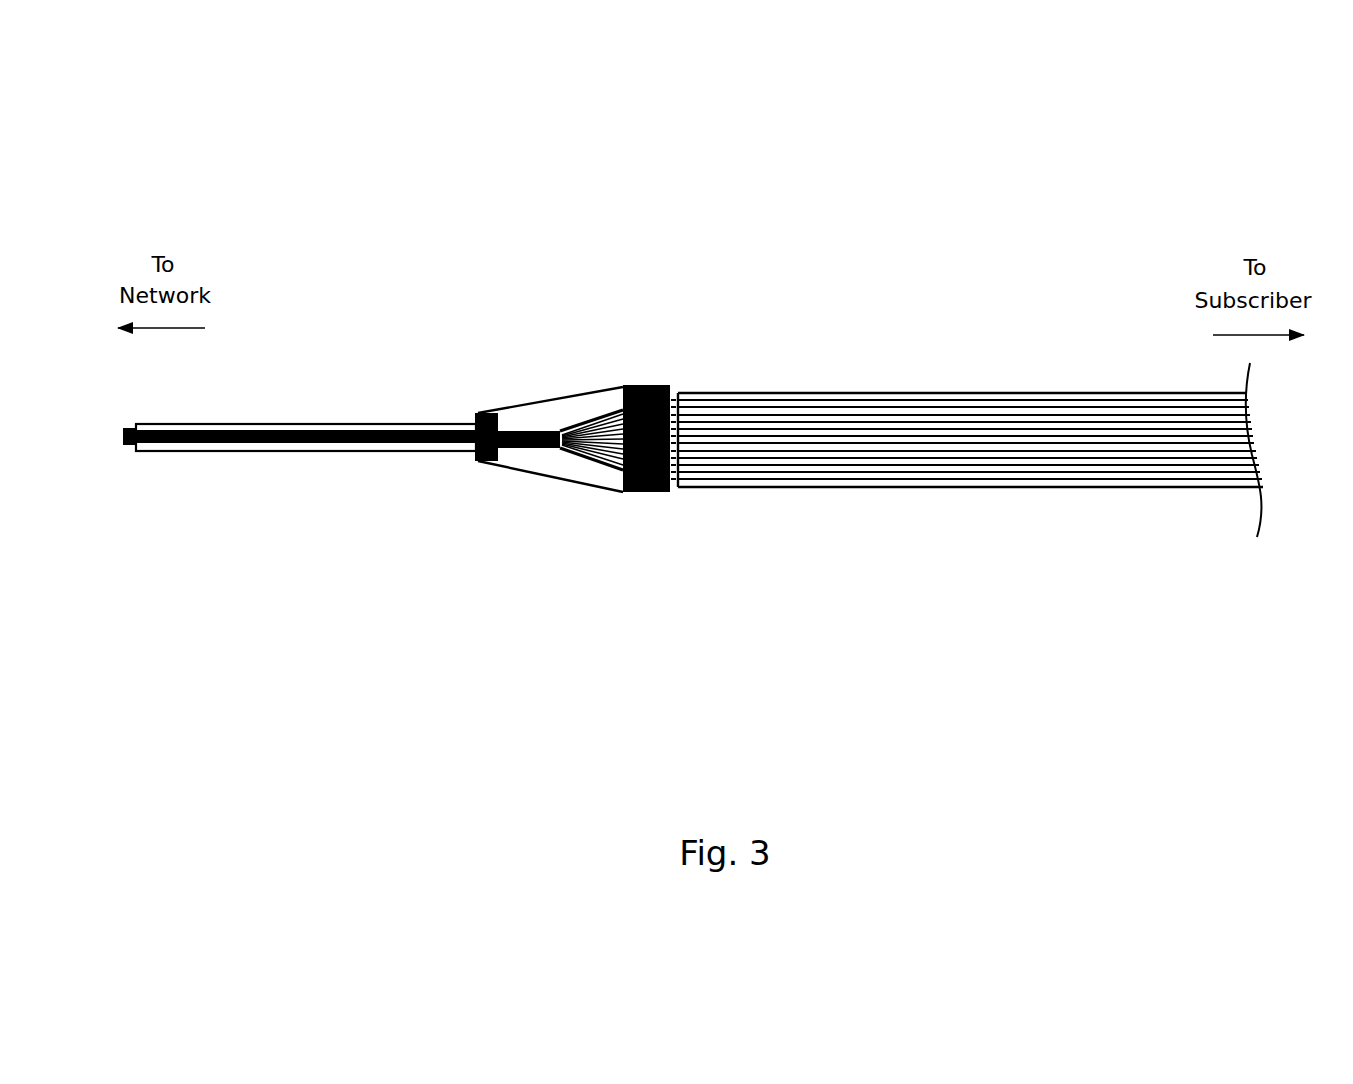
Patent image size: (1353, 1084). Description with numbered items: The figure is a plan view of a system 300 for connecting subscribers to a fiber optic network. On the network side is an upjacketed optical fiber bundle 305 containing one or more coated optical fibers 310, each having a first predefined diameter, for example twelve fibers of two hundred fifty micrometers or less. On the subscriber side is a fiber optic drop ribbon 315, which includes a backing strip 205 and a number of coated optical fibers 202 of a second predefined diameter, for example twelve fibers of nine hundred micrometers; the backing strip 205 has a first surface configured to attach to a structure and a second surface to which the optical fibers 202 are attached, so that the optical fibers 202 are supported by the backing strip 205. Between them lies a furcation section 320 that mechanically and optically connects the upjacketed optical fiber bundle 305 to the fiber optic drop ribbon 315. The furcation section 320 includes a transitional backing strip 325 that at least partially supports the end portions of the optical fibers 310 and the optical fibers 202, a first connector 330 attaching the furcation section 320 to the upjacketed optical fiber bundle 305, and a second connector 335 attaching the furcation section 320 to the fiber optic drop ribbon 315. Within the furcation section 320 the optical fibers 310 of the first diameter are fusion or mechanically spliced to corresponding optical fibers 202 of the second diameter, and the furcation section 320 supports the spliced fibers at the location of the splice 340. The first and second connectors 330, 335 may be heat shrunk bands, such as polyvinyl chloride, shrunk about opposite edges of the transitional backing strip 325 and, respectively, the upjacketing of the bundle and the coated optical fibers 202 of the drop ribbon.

The system 300 is at (199, 182).
The upjacketed optical fiber bundle 305 is at (331, 407).
The coated optical fibers 310 is at (187, 447).
The furcation section 320 is at (599, 368).
The transitional backing strip 325 is at (555, 465).
The first connector 330 is at (474, 462).
The second connector 335 is at (655, 493).
The splice 340 is at (548, 424).
The fiber optic drop ribbon 315 is at (1065, 366).
The backing strip 205 is at (841, 392).
The coated optical fibers 202 is at (967, 465).